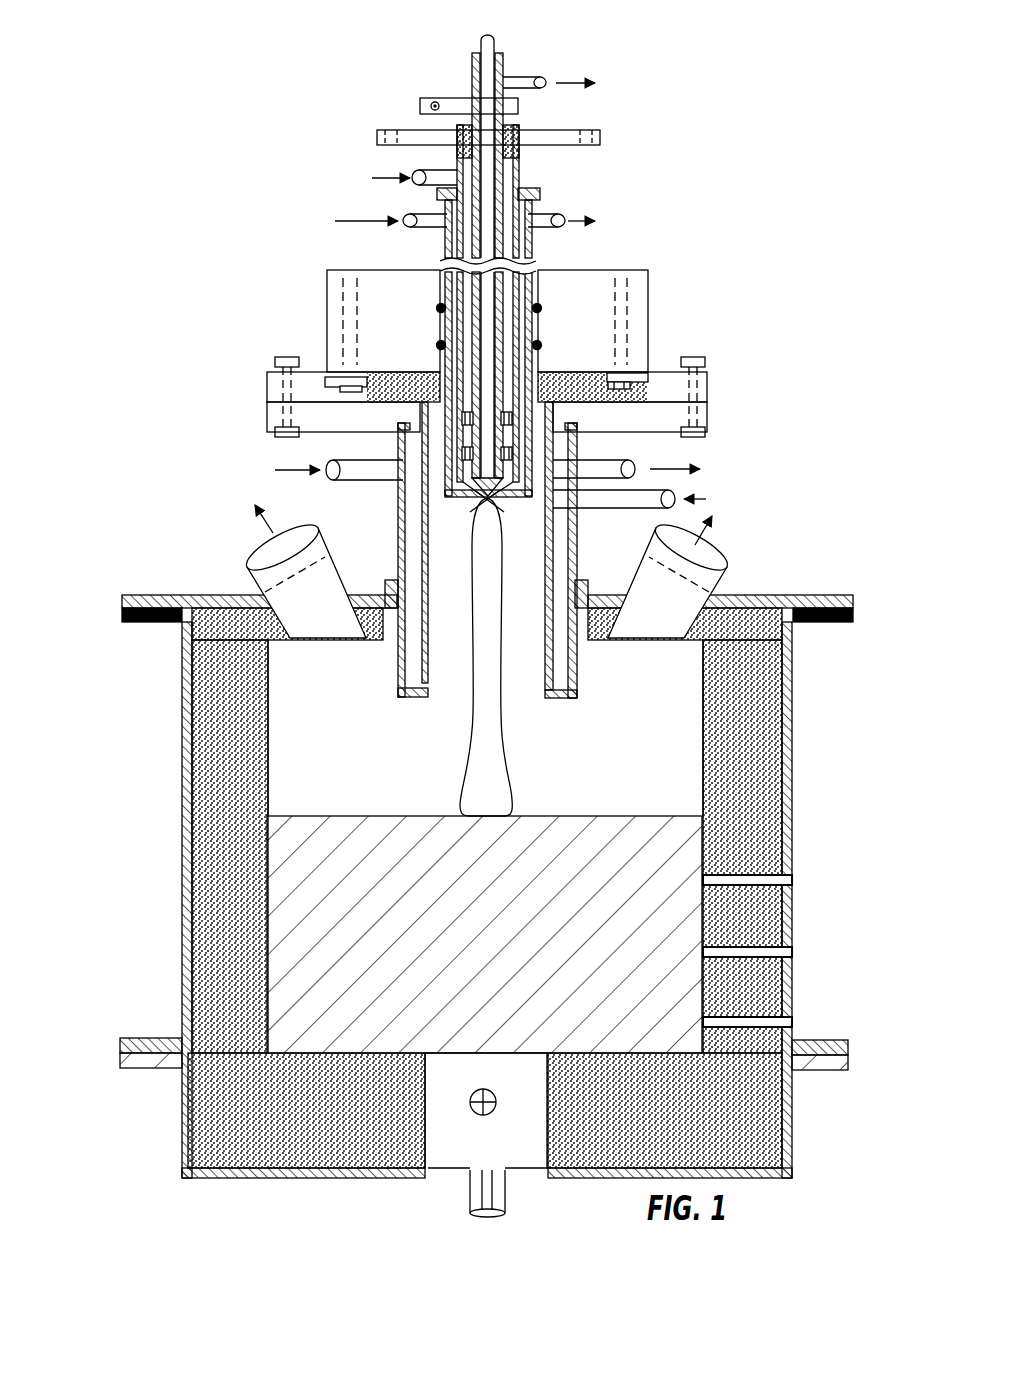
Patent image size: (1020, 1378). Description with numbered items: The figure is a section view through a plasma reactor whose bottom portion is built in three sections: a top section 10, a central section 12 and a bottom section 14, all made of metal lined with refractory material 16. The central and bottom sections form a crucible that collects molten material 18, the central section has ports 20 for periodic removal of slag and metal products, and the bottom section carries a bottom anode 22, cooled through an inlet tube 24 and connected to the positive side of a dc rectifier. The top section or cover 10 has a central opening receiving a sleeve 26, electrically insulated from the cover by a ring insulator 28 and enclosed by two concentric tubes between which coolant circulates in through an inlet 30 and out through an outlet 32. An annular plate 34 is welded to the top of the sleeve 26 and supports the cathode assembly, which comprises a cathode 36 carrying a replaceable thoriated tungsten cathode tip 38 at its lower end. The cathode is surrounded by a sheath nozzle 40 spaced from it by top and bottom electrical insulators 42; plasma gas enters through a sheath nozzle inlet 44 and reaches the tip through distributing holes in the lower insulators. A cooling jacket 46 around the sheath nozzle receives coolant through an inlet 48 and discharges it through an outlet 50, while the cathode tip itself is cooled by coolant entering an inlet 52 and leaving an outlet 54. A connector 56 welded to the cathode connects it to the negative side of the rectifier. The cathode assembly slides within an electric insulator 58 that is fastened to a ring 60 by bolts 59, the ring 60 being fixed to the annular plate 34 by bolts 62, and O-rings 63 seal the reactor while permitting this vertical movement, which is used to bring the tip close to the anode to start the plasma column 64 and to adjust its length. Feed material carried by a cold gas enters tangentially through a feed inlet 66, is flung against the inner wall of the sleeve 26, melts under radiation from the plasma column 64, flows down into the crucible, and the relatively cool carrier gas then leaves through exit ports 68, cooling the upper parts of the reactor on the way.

The top section 10 is at (152, 595).
The central section 12 is at (182, 848).
The bottom section 14 is at (182, 1110).
The refractory material 16 is at (226, 610).
The molten material 18 is at (375, 1025).
The ports 20 is at (793, 882).
The bottom anode 22 is at (487, 1215).
The inlet tube 24 is at (487, 1180).
The sleeve 26 is at (578, 530).
The ring insulator 28 is at (588, 592).
The inlet 30 is at (330, 462).
The outlet 32 is at (578, 462).
The annular plate 34 is at (707, 420).
The cathode 36 is at (432, 32).
The cathode tip 38 is at (482, 499).
The sheath nozzle 40 is at (520, 178).
The electrical insulators 42 is at (514, 136).
The sheath nozzle inlet 44 is at (448, 170).
The cooling jacket 46 is at (445, 240).
The inlet 48 is at (408, 214).
The outlet 50 is at (560, 214).
The inlet 52 is at (433, 14).
The outlet 54 is at (543, 78).
The connector 56 is at (443, 97).
The electric insulator 58 is at (648, 282).
The bolts 59 is at (491, 404).
The ring 60 is at (707, 388).
The bolts 62 is at (703, 362).
The O-rings 63 is at (542, 308).
The plasma column 64 is at (505, 786).
The feed inlet 66 is at (655, 508).
The exit ports 68 is at (326, 550).